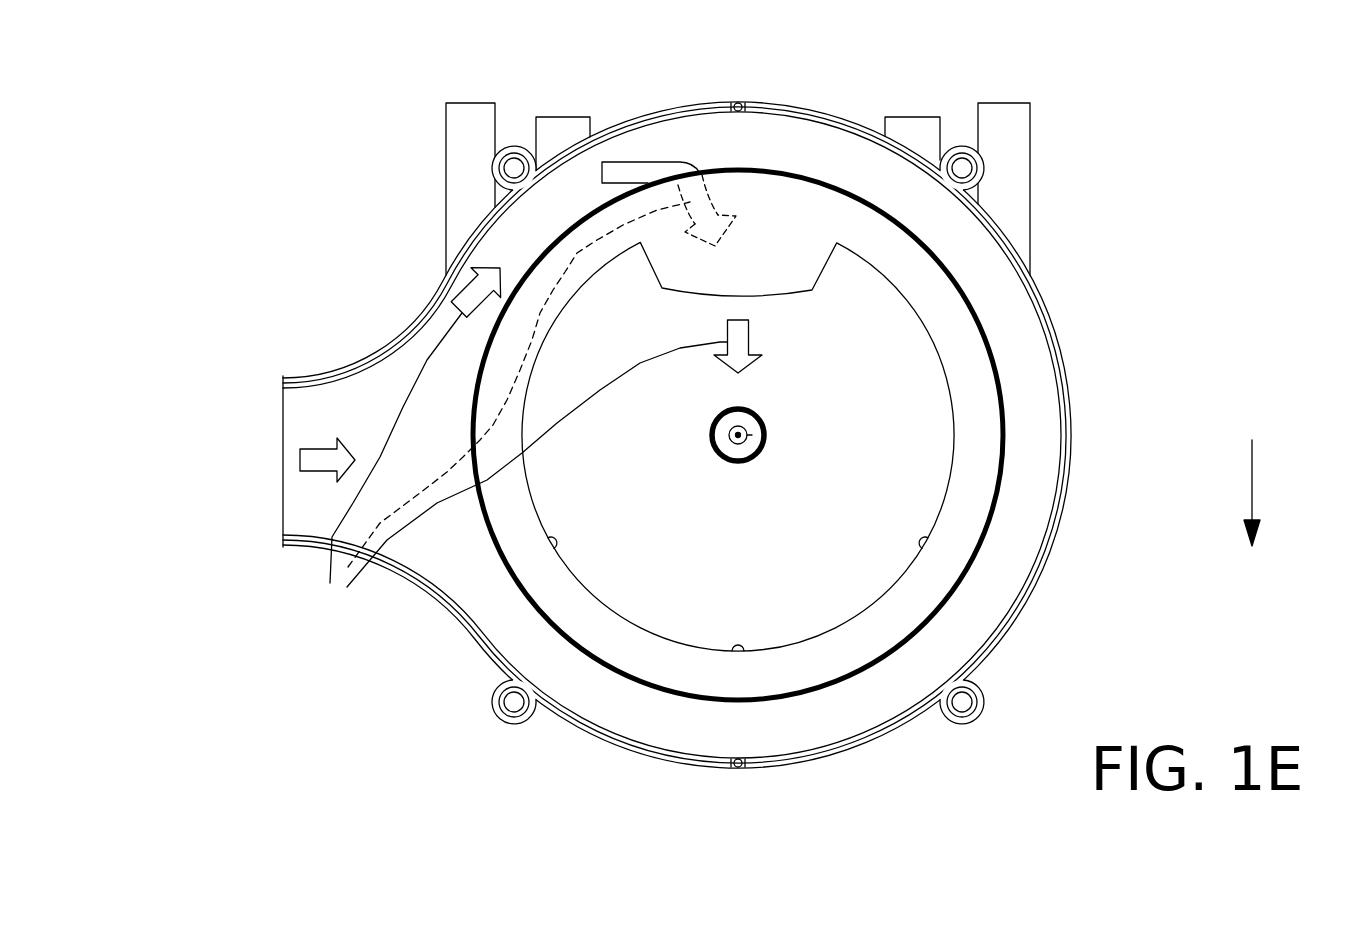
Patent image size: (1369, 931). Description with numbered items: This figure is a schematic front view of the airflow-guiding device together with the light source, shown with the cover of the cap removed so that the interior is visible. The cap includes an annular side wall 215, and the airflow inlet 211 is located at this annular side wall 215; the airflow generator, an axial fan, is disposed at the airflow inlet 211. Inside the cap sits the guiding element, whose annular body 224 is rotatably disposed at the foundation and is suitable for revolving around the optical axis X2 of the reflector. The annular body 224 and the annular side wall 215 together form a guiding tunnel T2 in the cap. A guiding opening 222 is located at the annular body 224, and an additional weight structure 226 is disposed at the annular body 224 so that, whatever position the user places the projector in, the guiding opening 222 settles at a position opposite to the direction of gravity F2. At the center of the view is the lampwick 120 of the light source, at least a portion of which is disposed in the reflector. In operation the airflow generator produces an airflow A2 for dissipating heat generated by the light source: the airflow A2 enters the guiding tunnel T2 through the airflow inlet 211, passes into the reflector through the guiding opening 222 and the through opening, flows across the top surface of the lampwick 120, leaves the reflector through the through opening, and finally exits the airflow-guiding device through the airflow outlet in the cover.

The lampwick 120 is at (718, 460).
The airflow inlet 211 is at (243, 443).
The annular side wall 215 is at (1050, 300).
The guiding opening 222 is at (764, 205).
The annular body 224 is at (845, 446).
The additional weight structure 226 is at (755, 775).
The airflow A2 is at (320, 472).
The guiding tunnel T2 is at (816, 150).
The optical axis X2 is at (942, 527).
The direction of gravity F2 is at (1260, 488).